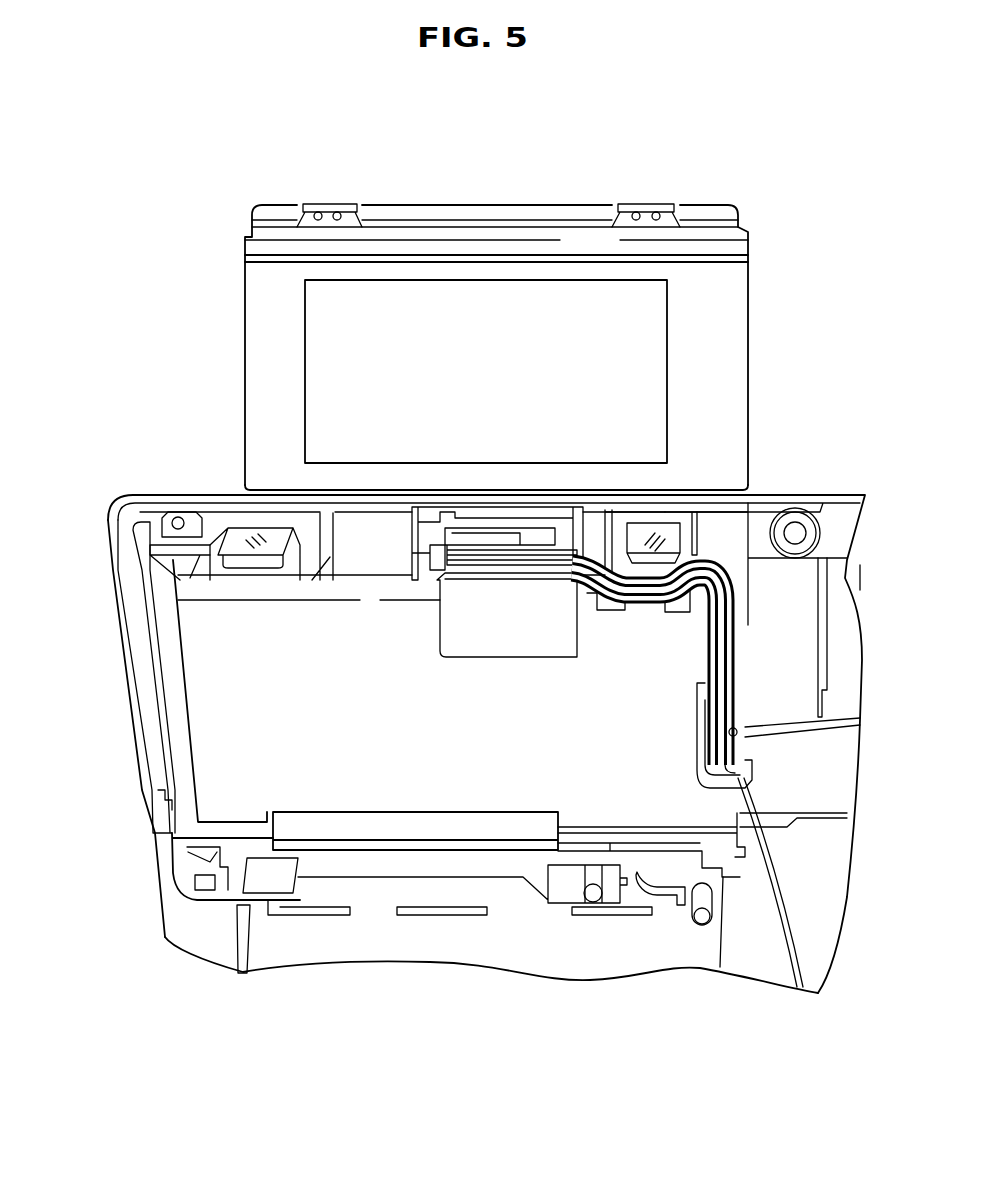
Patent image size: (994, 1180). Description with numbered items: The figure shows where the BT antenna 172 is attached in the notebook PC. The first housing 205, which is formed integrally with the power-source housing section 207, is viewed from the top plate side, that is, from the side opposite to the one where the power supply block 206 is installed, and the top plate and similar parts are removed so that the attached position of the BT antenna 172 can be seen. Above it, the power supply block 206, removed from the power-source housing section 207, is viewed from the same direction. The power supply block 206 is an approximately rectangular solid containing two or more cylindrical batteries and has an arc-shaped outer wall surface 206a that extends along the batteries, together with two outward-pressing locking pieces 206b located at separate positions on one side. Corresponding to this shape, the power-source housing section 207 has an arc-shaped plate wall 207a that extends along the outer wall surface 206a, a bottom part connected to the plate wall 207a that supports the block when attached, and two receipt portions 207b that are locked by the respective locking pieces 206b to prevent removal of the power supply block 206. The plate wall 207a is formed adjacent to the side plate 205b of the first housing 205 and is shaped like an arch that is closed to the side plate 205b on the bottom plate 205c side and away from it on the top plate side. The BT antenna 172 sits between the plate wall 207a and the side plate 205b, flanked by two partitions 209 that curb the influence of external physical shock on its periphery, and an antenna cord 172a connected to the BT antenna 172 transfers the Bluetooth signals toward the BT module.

The BT antenna 172 is at (440, 645).
The antenna cord 172a is at (735, 652).
The first housing 205 is at (116, 490).
The side plate 205b is at (467, 500).
The bottom plate 205c is at (588, 505).
The power supply block 206 is at (752, 303).
The outer wall surface 206a is at (510, 247).
The locking piece 206b is at (332, 208).
The power-source housing section 207 is at (157, 700).
The plate wall 207a is at (192, 578).
The receipt portion 207b is at (255, 540).
The partition 209 is at (648, 505).